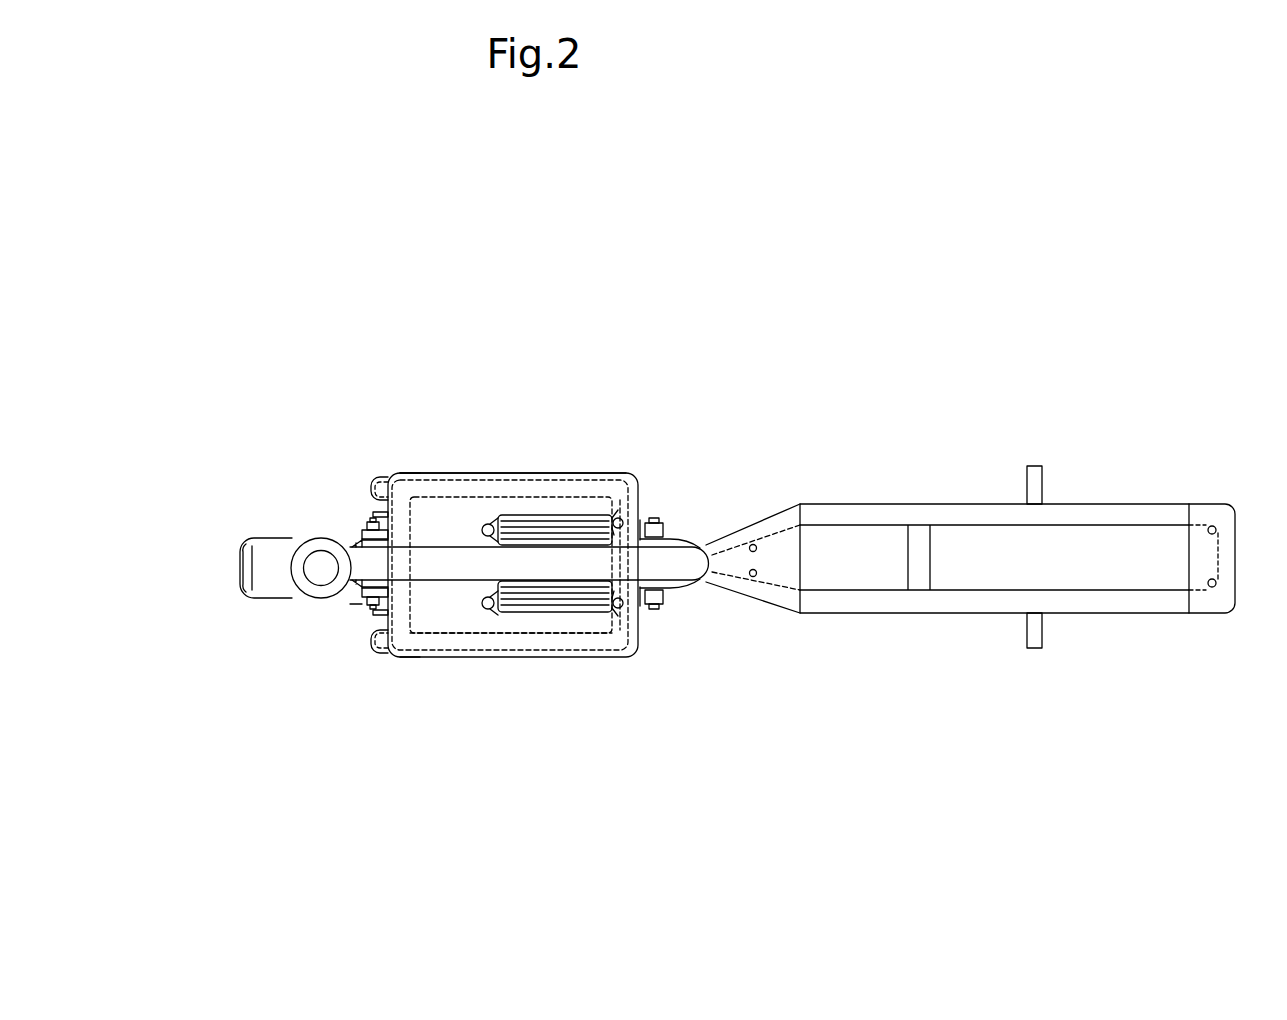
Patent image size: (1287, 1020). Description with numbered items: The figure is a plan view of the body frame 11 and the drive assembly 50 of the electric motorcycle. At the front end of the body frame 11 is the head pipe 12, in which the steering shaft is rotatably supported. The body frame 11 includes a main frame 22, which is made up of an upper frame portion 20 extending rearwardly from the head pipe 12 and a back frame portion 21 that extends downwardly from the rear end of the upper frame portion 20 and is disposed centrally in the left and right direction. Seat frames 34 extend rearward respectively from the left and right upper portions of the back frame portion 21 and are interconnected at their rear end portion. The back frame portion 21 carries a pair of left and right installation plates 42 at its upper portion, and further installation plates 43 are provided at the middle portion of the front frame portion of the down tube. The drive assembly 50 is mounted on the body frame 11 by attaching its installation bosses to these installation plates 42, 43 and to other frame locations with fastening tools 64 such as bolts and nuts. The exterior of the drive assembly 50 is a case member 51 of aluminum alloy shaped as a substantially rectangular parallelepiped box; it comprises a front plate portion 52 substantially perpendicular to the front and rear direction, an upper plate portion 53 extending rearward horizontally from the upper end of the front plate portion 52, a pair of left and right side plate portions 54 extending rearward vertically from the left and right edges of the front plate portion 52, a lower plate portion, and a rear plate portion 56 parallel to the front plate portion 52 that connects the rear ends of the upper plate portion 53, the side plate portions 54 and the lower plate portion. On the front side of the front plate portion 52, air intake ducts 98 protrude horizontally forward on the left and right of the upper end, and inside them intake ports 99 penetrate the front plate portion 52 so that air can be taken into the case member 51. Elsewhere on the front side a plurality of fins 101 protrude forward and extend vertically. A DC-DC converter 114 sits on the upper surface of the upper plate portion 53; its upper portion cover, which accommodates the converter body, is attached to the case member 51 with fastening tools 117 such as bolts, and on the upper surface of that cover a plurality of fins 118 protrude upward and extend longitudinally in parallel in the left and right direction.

The body frame 11 is at (912, 492).
The head pipe 12 is at (273, 568).
The upper frame portion 20 is at (432, 553).
The back frame portion 21 is at (706, 543).
The main frame 22 is at (473, 540).
The seat frames 34 is at (1087, 503).
The installation plates 42 is at (662, 521).
The installation plates 43 is at (350, 541).
The drive assembly 50 is at (614, 665).
The case member 51 is at (537, 466).
The front plate portion 52 is at (364, 522).
The upper plate portion 53 is at (457, 615).
The side plate portions 54 is at (505, 473).
The rear plate portion 56 is at (640, 522).
The fastening tool 64 is at (362, 603).
The air intake ducts 98 is at (386, 477).
The intake ports 99 is at (375, 488).
The fins 101 is at (355, 612).
The DC-DC converter 114 is at (563, 520).
The fastening tools 117 is at (618, 518).
The fins 118 is at (568, 603).